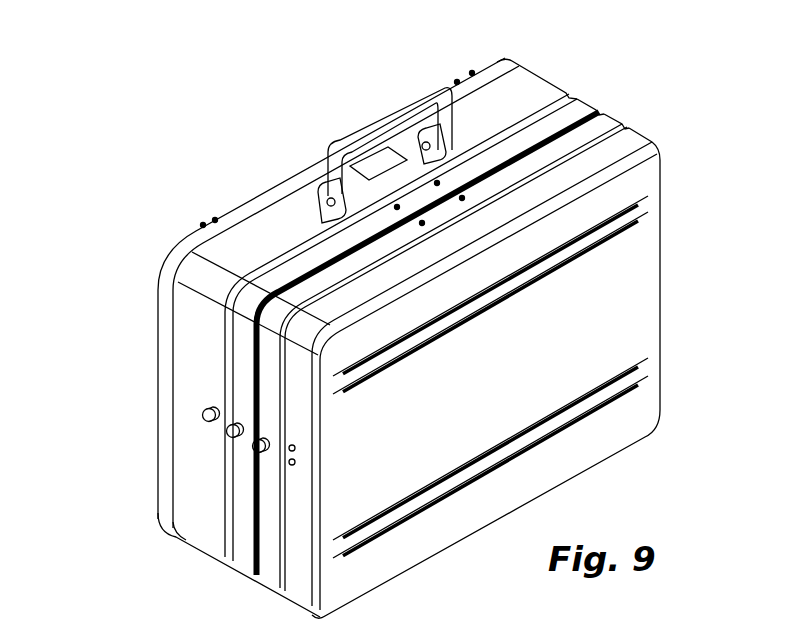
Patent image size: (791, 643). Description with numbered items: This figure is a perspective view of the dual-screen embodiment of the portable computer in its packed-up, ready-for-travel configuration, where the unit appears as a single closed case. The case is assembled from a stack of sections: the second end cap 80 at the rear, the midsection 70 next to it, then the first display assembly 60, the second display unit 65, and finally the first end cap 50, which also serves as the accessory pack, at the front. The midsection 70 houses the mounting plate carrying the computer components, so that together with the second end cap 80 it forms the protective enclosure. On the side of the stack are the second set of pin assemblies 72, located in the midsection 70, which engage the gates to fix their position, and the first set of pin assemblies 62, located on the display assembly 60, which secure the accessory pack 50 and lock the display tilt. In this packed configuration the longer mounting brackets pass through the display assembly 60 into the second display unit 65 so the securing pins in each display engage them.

The first end cap 50 is at (658, 144).
The display assembly 60 is at (589, 106).
The first set of pin assemblies 62 is at (252, 448).
The second display unit 65 is at (618, 121).
The midsection 70 is at (541, 74).
The second set of pin assemblies 72 is at (204, 413).
The second end cap 80 is at (511, 56).